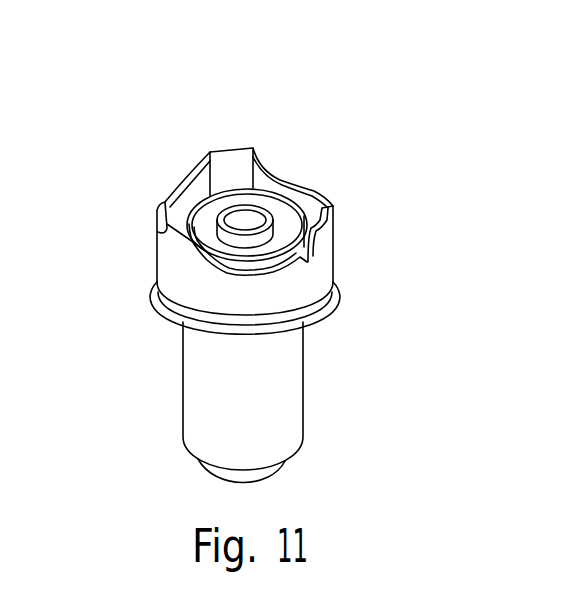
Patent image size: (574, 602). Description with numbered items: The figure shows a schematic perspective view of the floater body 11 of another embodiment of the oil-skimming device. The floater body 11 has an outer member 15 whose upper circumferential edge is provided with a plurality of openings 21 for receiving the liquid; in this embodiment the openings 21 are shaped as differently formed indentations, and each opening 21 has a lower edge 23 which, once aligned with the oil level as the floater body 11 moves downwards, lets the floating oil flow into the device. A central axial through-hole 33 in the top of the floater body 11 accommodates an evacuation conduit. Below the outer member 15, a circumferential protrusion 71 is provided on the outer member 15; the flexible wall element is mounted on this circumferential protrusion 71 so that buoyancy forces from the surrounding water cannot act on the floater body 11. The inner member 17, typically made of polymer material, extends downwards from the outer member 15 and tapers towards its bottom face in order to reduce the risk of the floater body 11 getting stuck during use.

The floater body 11 is at (229, 244).
The outer member 15 is at (229, 258).
The inner member 17 is at (210, 414).
The openings 21 is at (165, 200).
The lower edge 23 is at (174, 196).
The central axial through-hole 33 is at (247, 223).
The circumferential protrusion 71 is at (172, 311).